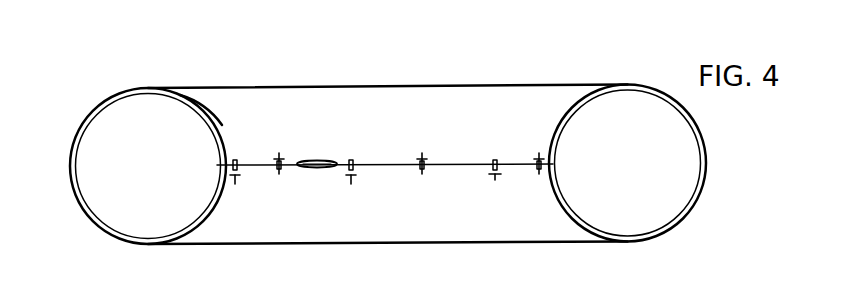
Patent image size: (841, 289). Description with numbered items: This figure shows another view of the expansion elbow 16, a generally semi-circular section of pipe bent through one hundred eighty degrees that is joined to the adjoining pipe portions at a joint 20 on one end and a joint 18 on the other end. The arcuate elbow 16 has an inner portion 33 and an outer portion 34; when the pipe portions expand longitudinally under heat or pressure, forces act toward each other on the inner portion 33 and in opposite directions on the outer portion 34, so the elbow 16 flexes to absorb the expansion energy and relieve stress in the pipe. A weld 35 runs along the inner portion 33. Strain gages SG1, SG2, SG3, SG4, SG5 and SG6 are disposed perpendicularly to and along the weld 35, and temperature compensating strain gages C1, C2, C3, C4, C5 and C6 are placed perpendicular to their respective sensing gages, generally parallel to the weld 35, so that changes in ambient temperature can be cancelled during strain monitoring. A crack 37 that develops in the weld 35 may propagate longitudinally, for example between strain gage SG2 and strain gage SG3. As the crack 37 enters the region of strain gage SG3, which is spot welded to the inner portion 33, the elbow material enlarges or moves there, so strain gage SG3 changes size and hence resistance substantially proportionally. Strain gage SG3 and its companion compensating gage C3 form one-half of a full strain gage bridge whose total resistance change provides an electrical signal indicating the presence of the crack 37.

The expansion elbow 16 is at (565, 73).
The joint 18 is at (688, 212).
The joint 20 is at (88, 115).
The inner portion 33 is at (205, 112).
The outer portion 34 is at (72, 163).
The weld 35 is at (219, 166).
The crack 37 is at (316, 160).
The strain gage SG1 is at (236, 158).
The strain gage SG2 is at (278, 171).
The strain gage SG3 is at (351, 158).
The strain gage SG4 is at (422, 172).
The strain gage SG5 is at (495, 158).
The strain gage SG6 is at (538, 172).
The temperature compensating strain gage C1 is at (235, 192).
The temperature compensating strain gage C2 is at (280, 156).
The temperature compensating strain gage C3 is at (350, 192).
The temperature compensating strain gage C4 is at (421, 156).
The temperature compensating strain gage C5 is at (493, 178).
The temperature compensating strain gage C6 is at (539, 156).